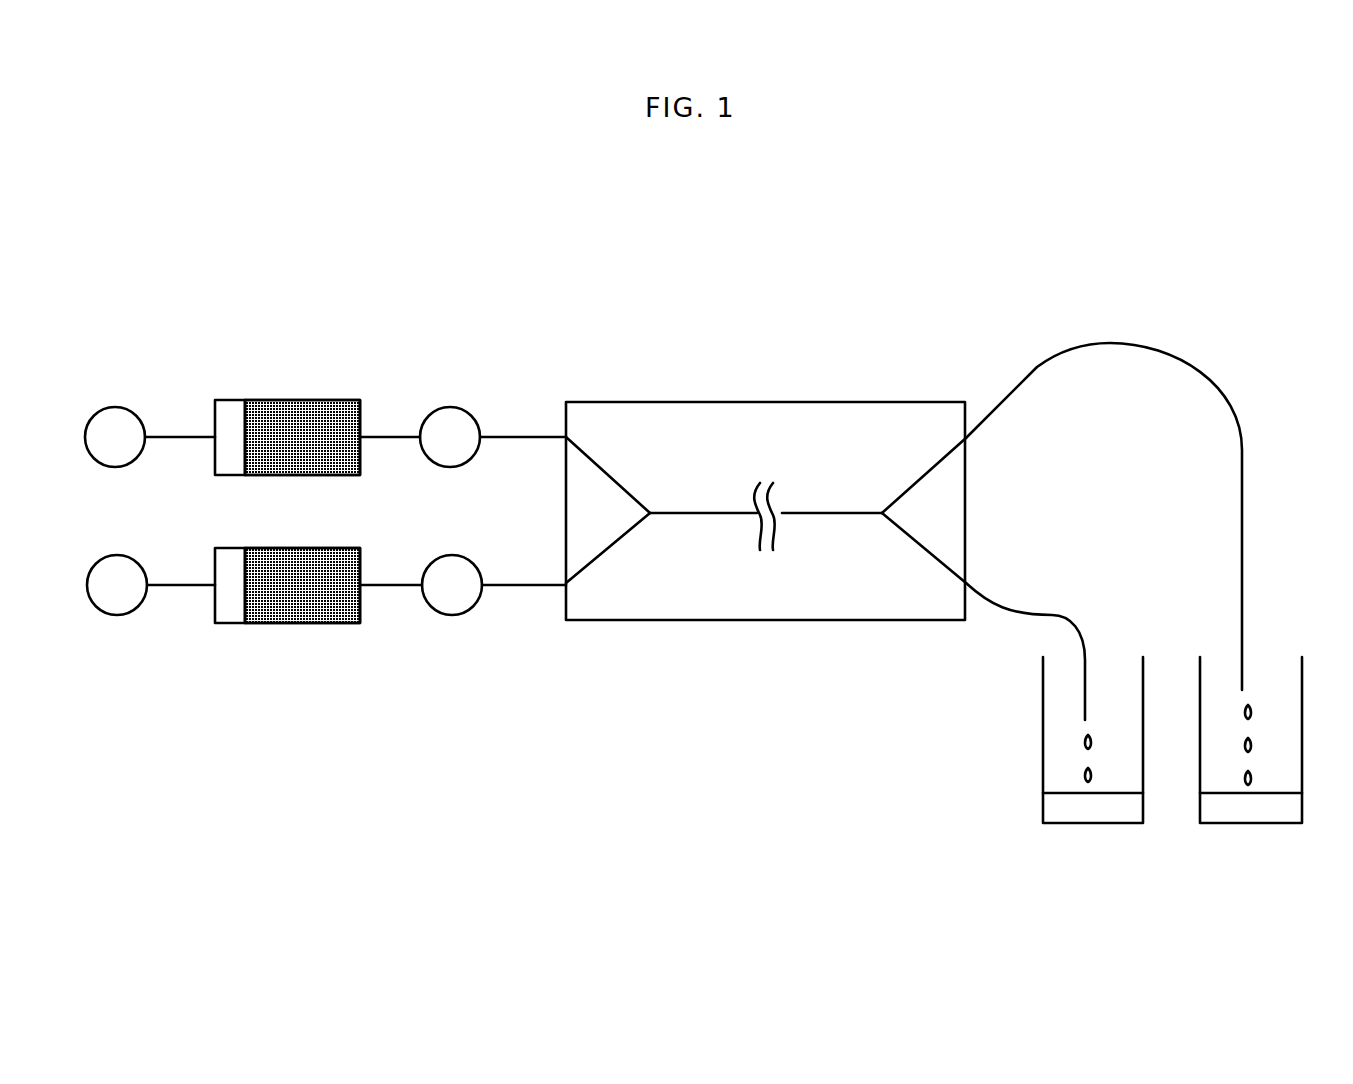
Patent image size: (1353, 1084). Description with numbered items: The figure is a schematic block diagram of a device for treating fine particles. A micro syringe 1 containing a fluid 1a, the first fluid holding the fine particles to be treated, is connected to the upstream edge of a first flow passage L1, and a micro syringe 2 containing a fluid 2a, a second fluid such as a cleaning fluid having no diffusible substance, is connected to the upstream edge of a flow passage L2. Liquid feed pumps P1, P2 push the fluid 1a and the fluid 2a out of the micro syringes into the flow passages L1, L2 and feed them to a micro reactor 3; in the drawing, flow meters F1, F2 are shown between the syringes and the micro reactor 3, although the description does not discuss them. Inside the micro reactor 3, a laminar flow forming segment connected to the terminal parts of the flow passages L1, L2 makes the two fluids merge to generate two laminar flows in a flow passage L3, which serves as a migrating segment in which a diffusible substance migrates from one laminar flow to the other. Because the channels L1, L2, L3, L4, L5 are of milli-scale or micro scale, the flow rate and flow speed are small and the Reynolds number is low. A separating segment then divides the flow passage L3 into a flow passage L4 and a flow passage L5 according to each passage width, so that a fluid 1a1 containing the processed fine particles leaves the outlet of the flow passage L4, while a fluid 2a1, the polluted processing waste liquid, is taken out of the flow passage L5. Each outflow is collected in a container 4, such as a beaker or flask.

The liquid feed pump P1 is at (112, 407).
The micro syringe 1 is at (232, 400).
The fluid (first fluid) 1a is at (335, 400).
The first flow meter F1 is at (453, 407).
The liquid feed pump P2 is at (117, 617).
The micro syringe 2 is at (237, 623).
The fluid (second fluid) 2a is at (325, 623).
The second flow meter F2 is at (452, 617).
The micro reactor 3 is at (818, 402).
The first flow passage L1 is at (615, 480).
The flow passage L2 is at (600, 555).
The flow passage (migrating segment) L3 is at (715, 508).
The flow passage L4 is at (905, 490).
The flow passage L5 is at (905, 540).
The fluid (first fluid) 1a1 is at (1108, 543).
The fluid (second fluid) 2a1 is at (1057, 682).
The container 4 is at (1093, 823).